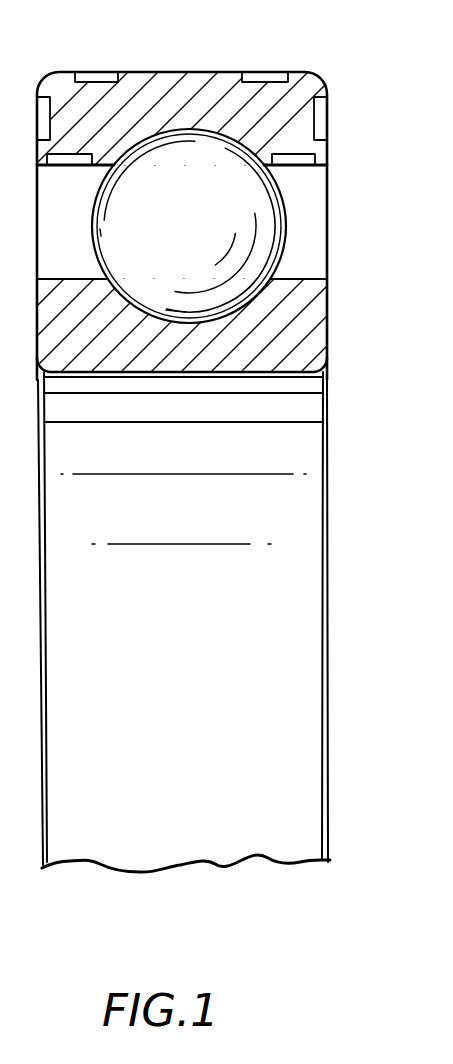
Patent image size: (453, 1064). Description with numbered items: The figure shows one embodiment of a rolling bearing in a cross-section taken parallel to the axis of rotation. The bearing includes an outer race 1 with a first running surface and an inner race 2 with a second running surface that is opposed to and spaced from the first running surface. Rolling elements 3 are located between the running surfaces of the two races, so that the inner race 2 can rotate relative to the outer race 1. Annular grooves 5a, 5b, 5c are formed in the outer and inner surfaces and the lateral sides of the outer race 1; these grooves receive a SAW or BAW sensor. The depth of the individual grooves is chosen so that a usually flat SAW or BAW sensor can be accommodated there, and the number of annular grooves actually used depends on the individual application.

The outer race 1 is at (310, 85).
The inner race 2 is at (313, 330).
The rolling elements 3 is at (268, 233).
The annular groove 5a is at (253, 75).
The annular groove 5b is at (50, 108).
The annular groove 5c is at (73, 160).